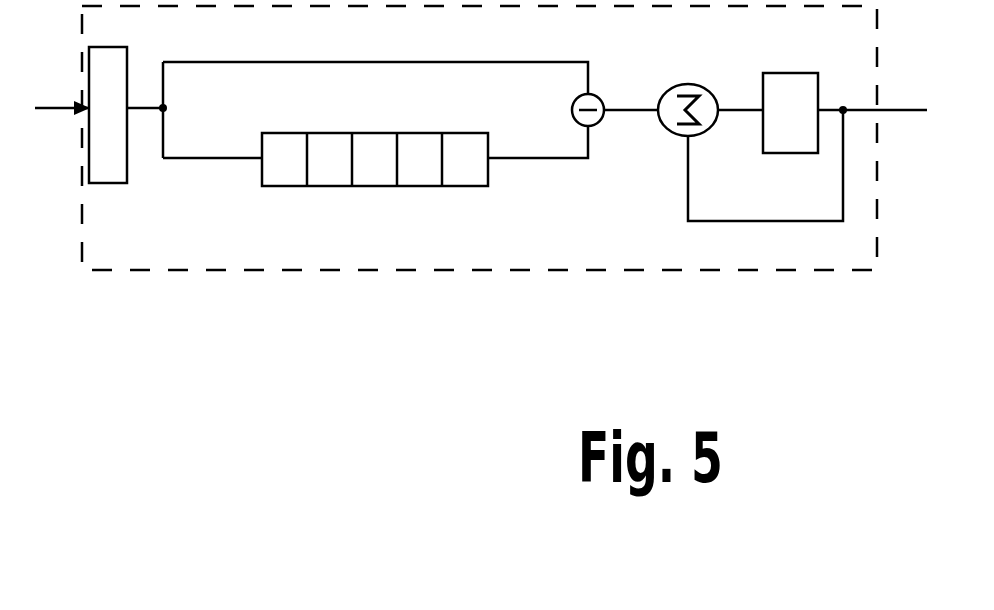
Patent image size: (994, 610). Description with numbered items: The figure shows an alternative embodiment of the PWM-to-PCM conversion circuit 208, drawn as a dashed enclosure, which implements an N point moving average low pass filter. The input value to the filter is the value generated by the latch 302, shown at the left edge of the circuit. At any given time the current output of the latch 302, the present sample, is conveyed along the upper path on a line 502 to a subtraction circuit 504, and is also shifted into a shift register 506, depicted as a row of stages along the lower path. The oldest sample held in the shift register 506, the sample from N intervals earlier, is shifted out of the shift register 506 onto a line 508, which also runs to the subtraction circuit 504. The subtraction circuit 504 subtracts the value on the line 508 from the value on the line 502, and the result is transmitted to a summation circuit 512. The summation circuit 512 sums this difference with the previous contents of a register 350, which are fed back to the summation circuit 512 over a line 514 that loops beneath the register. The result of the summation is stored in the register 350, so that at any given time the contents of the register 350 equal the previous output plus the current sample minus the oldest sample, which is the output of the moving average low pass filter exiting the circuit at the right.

The PWM-to-PCM conversion circuit 208 is at (477, 271).
The latch 302 is at (128, 61).
The line 502 is at (375, 62).
The subtraction circuit 504 is at (600, 98).
The shift register 506 is at (368, 186).
The line 508 is at (568, 158).
The summation circuit 512 is at (648, 112).
The register 350 is at (800, 153).
The line 514 is at (758, 221).